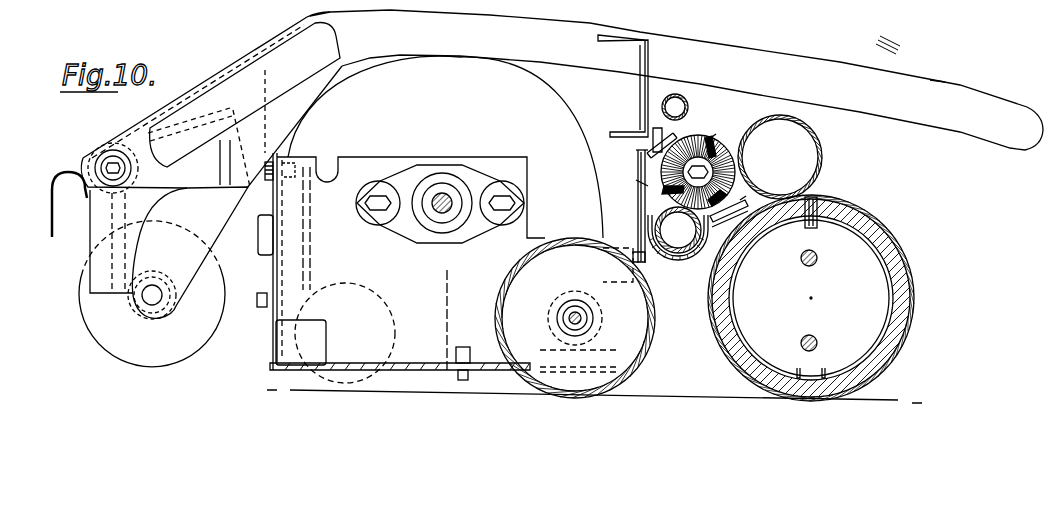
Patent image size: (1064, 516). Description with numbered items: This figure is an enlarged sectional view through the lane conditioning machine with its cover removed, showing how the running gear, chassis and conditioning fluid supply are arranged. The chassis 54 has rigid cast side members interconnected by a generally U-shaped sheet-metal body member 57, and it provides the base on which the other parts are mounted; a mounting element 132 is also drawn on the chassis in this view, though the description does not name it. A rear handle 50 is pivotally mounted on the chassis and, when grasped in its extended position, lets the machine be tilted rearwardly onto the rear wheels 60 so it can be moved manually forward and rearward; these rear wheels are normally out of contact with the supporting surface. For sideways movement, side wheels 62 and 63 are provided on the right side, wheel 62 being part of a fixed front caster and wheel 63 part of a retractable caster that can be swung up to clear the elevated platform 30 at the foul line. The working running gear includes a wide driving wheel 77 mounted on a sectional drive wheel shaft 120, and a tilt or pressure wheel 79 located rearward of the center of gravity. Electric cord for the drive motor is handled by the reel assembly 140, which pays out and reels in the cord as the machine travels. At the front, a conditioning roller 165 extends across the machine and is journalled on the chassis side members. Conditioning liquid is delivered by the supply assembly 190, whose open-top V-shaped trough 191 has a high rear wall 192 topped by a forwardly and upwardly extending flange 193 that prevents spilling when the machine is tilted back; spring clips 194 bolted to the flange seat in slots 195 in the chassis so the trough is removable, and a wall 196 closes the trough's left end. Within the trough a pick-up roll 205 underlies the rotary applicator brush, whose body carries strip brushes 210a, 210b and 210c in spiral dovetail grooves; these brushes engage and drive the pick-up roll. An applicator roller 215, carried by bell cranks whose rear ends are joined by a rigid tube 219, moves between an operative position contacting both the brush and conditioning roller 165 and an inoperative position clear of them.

The side wheel 62 is at (826, 2).
The rear handle 50 is at (935, 97).
The side wheel 63 is at (242, 0).
The U-shaped body member 57 is at (270, 339).
The rear wheels 60 is at (101, 323).
The chassis 54 is at (240, 359).
The tilt or pressure wheel 79 is at (298, 373).
The mounting flange 132 is at (445, 200).
The reel assembly 140 is at (551, 83).
The supply assembly 190 is at (634, 116).
The rigid tube 219 is at (686, 97).
The spring clips 194 is at (637, 164).
The slots 195 is at (638, 149).
The rear wall 192 is at (650, 183).
The platform 30 is at (641, 244).
The flange 193 is at (682, 134).
The strip brush 210c is at (726, 134).
The applicator roller 215 is at (822, 148).
The strip brush 210b is at (744, 198).
The strip brush 210a is at (667, 182).
The trough 191 is at (682, 260).
The wall 196 is at (719, 213).
The pick-up roll 205 is at (709, 238).
The conditioning roller 165 is at (864, 211).
The wheel 77 is at (651, 350).
The drive wheel shaft 120 is at (573, 306).